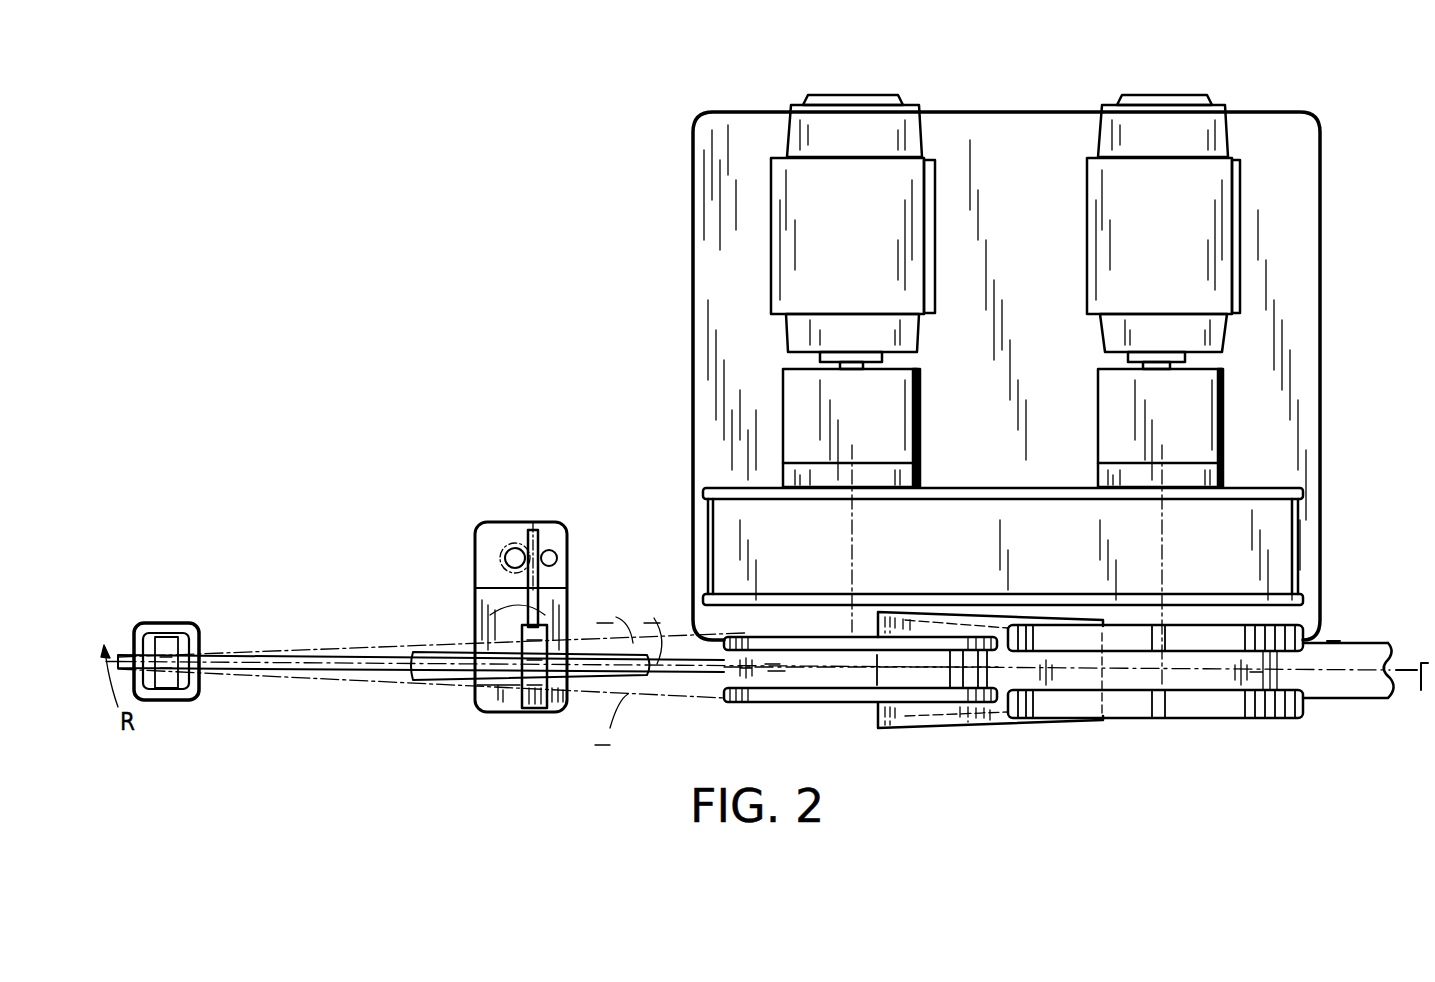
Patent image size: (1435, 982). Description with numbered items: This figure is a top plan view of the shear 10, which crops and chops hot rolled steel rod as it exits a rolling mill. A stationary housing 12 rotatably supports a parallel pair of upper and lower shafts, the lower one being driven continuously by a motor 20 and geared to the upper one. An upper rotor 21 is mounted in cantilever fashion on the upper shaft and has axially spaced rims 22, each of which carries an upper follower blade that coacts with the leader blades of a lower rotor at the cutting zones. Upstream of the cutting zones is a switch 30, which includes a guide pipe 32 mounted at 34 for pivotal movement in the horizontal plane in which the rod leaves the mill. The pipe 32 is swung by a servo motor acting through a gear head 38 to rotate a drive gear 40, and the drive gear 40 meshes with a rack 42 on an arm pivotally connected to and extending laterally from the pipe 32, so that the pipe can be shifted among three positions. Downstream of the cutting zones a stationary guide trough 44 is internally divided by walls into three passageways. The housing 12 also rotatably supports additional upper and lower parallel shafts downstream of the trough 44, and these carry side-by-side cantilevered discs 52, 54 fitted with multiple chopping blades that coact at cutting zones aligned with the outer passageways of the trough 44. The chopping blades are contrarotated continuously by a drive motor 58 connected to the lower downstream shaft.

The shear 10 is at (612, 196).
The stationary housing 12 is at (1048, 492).
The motor 20 is at (862, 251).
The upper rotor 21 is at (832, 667).
The rims 22 is at (775, 640).
The switch 30 is at (346, 596).
The guide pipe 32 is at (327, 680).
The pivotal mounting 34 is at (196, 636).
The gear head 38 is at (505, 522).
The drive gear 40 is at (497, 560).
The rack 42 is at (515, 604).
The stationary guide trough 44 is at (1003, 727).
The cantilevered disc 52 is at (1207, 633).
The cantilevered disc 54 is at (1203, 707).
The drive motor 58 is at (1172, 251).